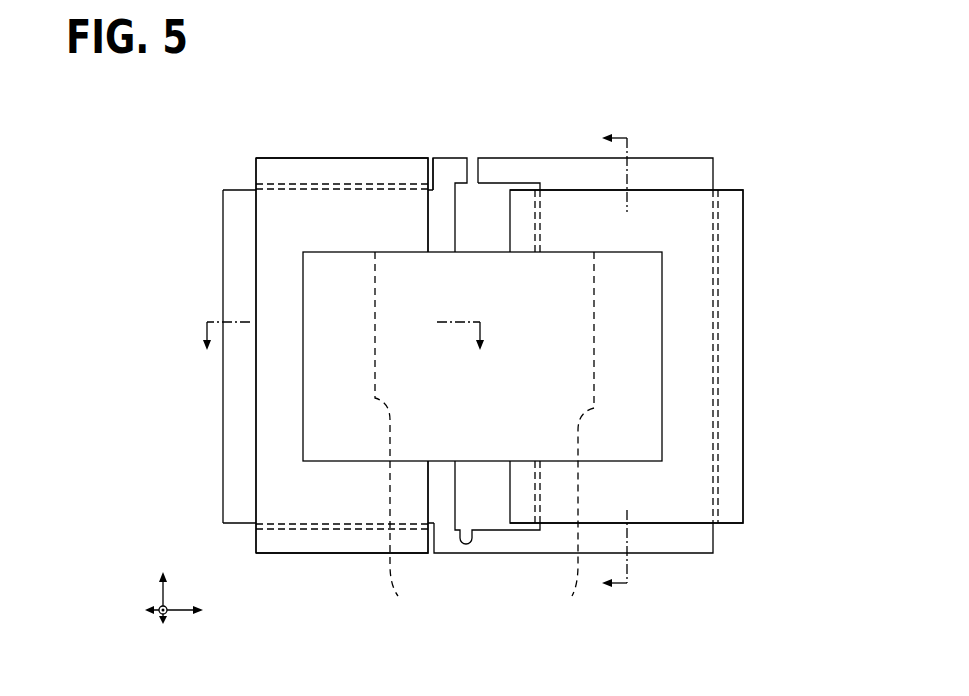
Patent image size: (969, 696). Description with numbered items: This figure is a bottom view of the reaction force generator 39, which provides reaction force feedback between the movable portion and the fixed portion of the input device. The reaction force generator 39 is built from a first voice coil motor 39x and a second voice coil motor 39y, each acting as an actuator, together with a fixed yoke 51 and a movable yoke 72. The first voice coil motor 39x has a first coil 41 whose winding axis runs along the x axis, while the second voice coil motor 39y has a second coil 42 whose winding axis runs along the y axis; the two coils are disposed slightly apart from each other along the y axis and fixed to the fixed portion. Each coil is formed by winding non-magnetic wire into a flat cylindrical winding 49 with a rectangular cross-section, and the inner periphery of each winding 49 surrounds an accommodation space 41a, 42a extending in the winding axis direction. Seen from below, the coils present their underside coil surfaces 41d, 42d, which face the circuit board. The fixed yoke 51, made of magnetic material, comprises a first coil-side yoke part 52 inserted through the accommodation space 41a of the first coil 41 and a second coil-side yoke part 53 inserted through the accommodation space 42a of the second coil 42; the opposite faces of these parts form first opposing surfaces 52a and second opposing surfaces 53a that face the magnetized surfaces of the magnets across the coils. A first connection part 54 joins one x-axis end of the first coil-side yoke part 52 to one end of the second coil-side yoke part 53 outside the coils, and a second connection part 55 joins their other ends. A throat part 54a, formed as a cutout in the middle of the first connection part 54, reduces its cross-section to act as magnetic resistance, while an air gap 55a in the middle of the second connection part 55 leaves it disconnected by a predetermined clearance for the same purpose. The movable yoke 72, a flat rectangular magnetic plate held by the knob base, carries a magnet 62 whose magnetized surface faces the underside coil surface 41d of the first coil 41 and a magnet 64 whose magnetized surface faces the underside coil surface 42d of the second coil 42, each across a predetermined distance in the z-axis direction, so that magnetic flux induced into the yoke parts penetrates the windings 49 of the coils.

The reaction force generator 39 is at (724, 130).
The first voice coil motor 39x is at (757, 178).
The second voice coil motor 39y is at (234, 148).
The first coil 41 is at (676, 307).
The accommodation space 41a is at (543, 205).
The underside coil surface 41d is at (727, 340).
The second coil 42 is at (290, 359).
The accommodation space 42a is at (287, 190).
The underside coil surface 42d is at (288, 535).
The winding 49 is at (499, 355).
The fixed yoke 51 is at (236, 436).
The first coil-side yoke part 52 is at (599, 140).
The first opposing surfaces 52a is at (595, 174).
The second coil-side yoke part 53 is at (269, 340).
The second opposing surfaces 53a is at (294, 340).
The first connection part 54 is at (573, 544).
The throat part 54a is at (462, 546).
The second connection part 55 is at (509, 172).
The air gap 55a is at (470, 158).
The magnet 62 is at (577, 440).
The magnet 64 is at (393, 440).
The movable yoke 72 is at (465, 270).